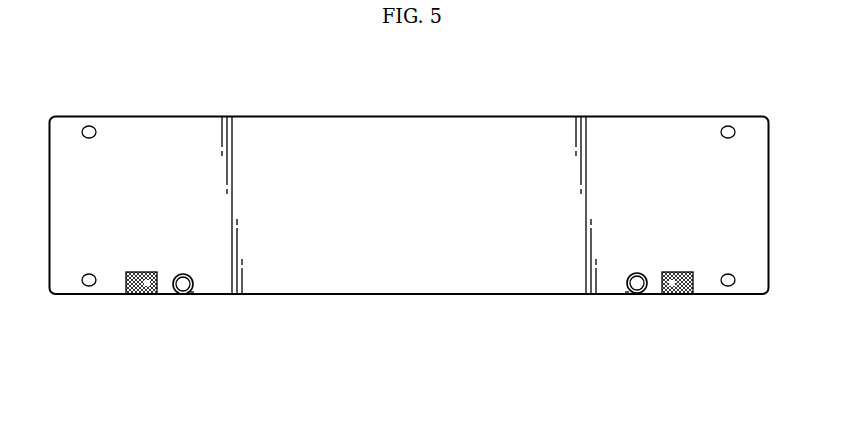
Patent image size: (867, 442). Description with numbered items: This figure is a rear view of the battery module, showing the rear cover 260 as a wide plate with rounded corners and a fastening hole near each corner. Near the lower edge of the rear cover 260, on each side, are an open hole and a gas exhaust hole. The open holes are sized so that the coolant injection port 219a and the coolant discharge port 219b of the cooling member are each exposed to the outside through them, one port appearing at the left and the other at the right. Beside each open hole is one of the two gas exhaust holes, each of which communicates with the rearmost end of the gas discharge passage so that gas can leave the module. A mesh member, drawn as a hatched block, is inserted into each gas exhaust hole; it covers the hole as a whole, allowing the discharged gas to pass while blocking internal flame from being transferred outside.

The rear cover 260 is at (701, 106).
The coolant injection port 219a is at (627, 293).
The coolant discharge port 219b is at (192, 293).